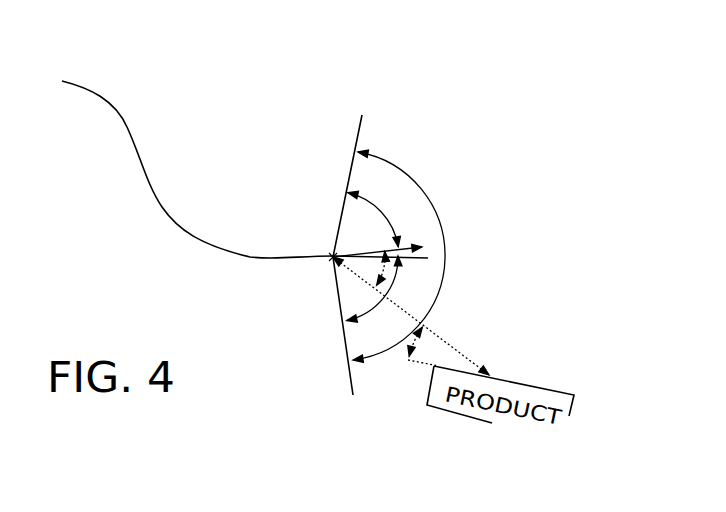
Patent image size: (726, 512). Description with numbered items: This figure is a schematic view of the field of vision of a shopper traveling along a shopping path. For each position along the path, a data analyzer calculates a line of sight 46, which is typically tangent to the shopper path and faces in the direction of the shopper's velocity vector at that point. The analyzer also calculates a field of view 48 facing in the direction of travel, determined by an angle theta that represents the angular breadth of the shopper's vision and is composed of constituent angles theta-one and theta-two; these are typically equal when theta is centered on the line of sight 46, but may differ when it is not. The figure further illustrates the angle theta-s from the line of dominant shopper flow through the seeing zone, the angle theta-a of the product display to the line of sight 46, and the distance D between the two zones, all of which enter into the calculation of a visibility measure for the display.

The line of sight 46 is at (363, 252).
The field of view 48 is at (361, 132).
The distance between zones D is at (411, 316).